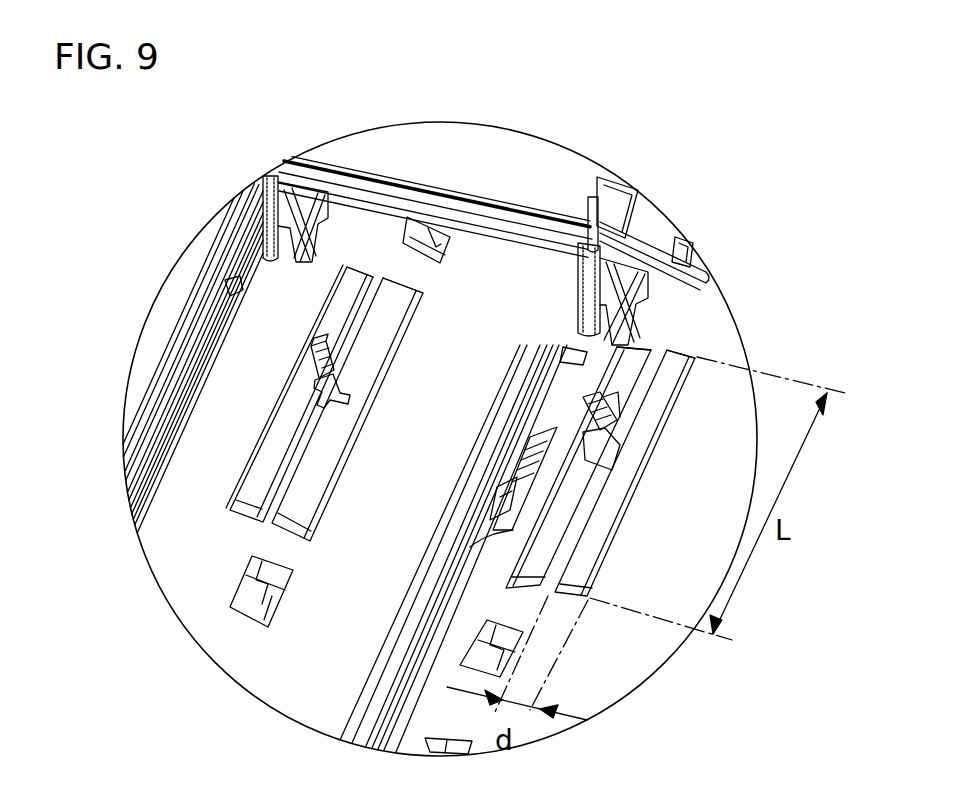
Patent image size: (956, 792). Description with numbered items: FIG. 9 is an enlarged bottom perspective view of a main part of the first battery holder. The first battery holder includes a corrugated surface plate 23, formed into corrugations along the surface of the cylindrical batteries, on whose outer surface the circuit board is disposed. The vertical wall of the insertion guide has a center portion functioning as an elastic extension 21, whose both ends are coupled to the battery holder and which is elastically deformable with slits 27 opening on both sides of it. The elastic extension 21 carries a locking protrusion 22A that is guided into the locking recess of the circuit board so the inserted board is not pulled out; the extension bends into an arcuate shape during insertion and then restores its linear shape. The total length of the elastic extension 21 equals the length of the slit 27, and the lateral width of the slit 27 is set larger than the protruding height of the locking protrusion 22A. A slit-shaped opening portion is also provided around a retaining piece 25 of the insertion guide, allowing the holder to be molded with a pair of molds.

The elastic extension 21 is at (297, 455).
The locking protrusion 22A is at (586, 424).
The corrugated surface plate 23 is at (217, 583).
The retaining piece 25 is at (592, 425).
The slit 27 is at (364, 257).